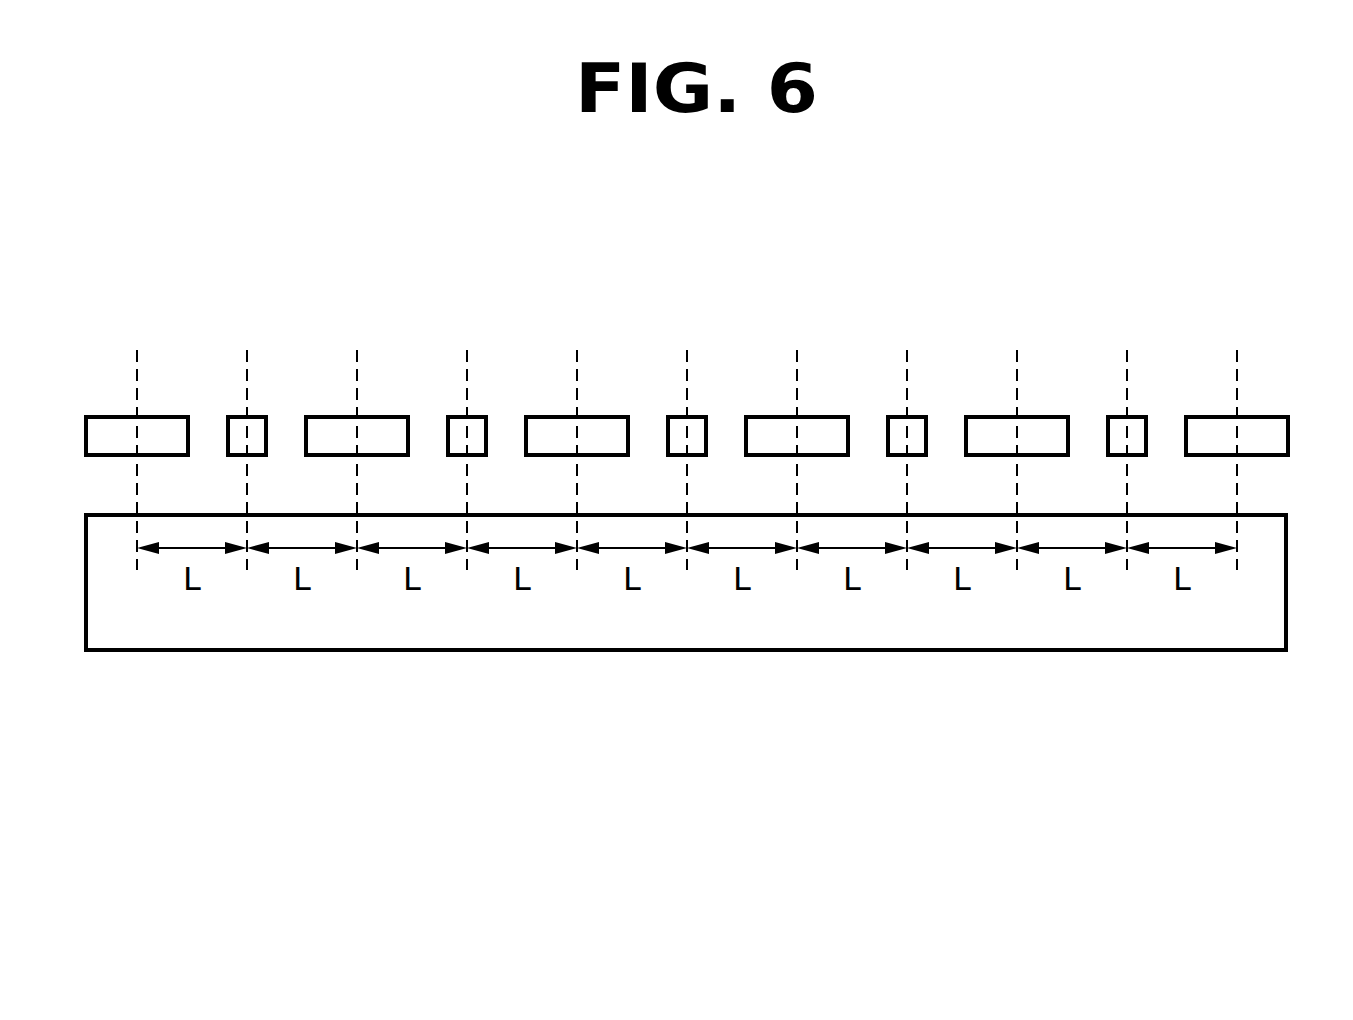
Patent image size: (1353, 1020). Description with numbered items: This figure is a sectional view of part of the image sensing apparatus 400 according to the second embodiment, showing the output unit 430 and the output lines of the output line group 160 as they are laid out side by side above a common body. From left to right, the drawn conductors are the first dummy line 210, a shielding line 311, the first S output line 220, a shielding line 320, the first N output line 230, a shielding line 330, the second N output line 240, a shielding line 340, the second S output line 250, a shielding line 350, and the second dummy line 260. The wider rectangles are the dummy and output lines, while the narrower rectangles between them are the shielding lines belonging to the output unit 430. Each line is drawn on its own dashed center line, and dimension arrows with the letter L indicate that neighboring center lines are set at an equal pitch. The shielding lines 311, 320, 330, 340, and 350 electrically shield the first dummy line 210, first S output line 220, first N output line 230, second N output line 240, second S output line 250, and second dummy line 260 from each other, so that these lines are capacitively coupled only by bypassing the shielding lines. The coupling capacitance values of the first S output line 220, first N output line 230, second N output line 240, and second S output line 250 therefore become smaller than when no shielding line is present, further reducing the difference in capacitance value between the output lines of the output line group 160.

The output line group 160 is at (364, 294).
The output unit 430 is at (254, 294).
The image sensing apparatus 400 is at (259, 764).
The first dummy line 210 is at (180, 415).
The first S output line 220 is at (400, 415).
The first N output line 230 is at (620, 415).
The second N output line 240 is at (840, 415).
The second S output line 250 is at (1060, 415).
The second dummy line 260 is at (1280, 415).
The shielding line 311 is at (257, 415).
The shielding line 320 is at (477, 415).
The shielding line 330 is at (697, 415).
The shielding line 340 is at (917, 415).
The shielding line 350 is at (1137, 415).